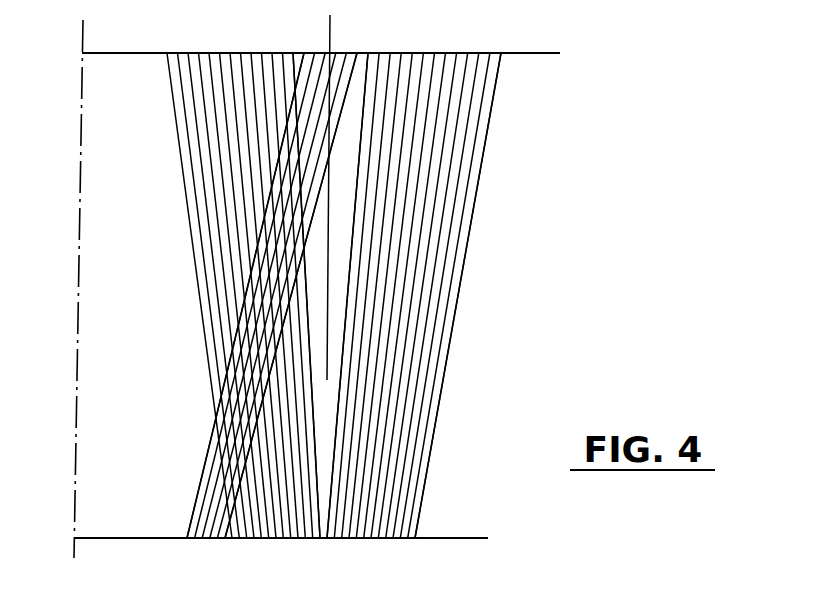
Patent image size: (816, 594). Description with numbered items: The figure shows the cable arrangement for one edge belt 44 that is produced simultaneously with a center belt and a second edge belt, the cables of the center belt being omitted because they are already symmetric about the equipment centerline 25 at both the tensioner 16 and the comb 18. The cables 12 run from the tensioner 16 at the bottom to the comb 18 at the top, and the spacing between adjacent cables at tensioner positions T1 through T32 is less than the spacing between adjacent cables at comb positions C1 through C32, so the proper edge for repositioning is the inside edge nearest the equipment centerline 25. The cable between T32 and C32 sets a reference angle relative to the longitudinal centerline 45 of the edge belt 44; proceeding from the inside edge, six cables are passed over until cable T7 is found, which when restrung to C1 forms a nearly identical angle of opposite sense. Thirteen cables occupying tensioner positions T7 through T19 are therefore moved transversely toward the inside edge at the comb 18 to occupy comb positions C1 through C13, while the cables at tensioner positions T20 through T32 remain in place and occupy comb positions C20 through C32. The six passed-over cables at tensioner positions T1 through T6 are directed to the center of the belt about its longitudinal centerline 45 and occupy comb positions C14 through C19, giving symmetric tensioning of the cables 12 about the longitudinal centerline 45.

The cables 12 is at (423, 218).
The tensioner 16 is at (470, 538).
The comb 18 is at (546, 56).
The equipment centerline 25 is at (81, 153).
The edge belt 44 is at (468, 285).
The longitudinal centerline 45 is at (327, 328).
The comb position C1 is at (168, 52).
The comb position C13 is at (293, 52).
The comb position C14 is at (304, 52).
The comb position C19 is at (357, 52).
The comb position C20 is at (368, 52).
The comb position C32 is at (501, 52).
The tensioner position T1 is at (188, 539).
The tensioner position T6 is at (225, 539).
The tensioner position T7 is at (233, 539).
The tensioner position T19 is at (320, 539).
The tensioner position T20 is at (327, 539).
The tensioner position T32 is at (415, 539).